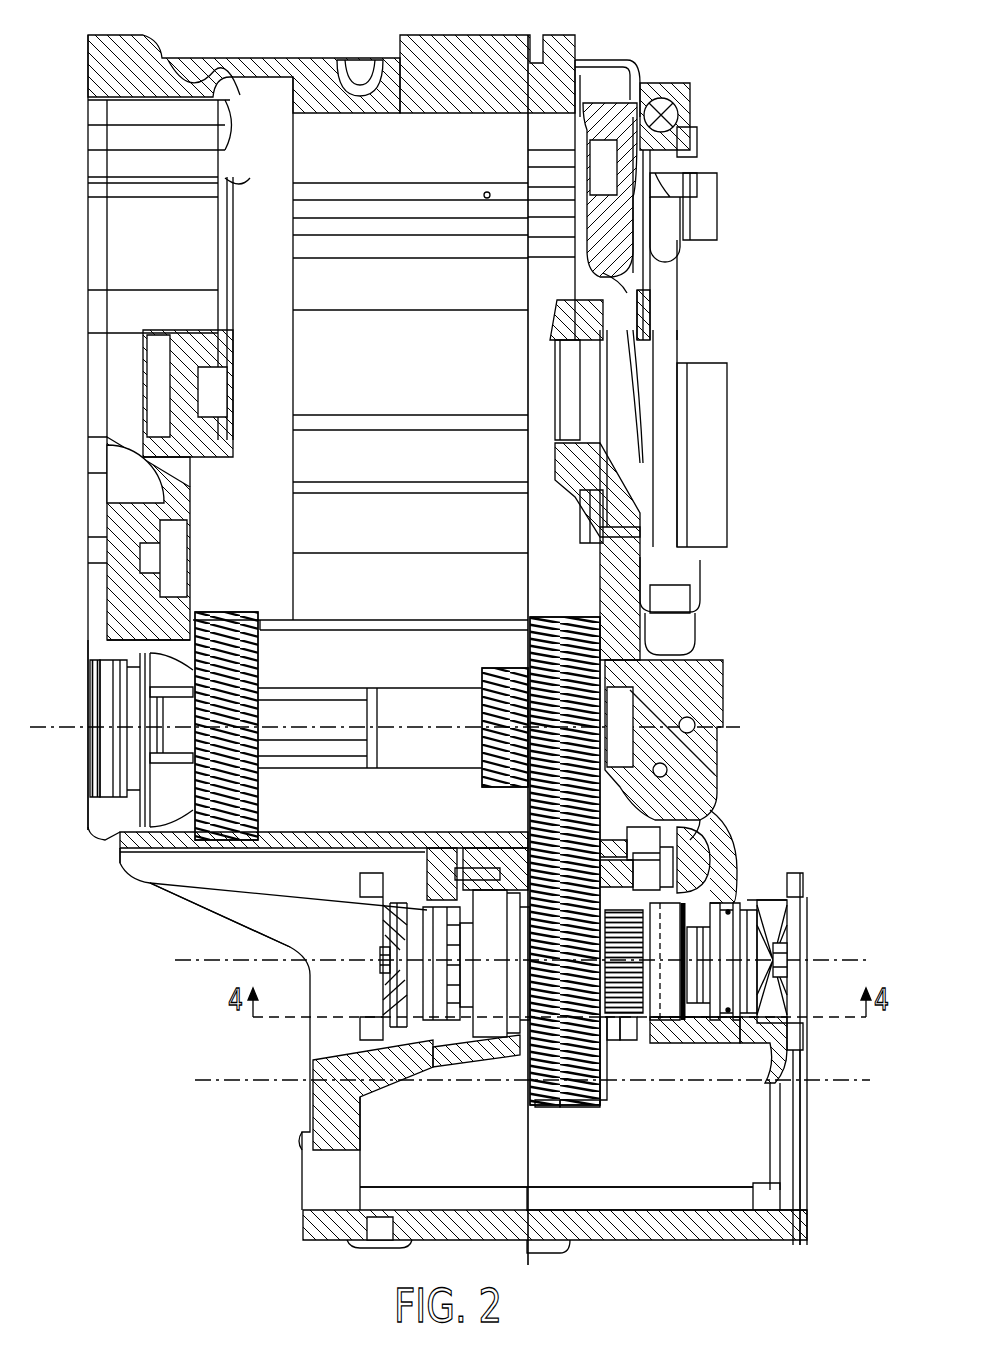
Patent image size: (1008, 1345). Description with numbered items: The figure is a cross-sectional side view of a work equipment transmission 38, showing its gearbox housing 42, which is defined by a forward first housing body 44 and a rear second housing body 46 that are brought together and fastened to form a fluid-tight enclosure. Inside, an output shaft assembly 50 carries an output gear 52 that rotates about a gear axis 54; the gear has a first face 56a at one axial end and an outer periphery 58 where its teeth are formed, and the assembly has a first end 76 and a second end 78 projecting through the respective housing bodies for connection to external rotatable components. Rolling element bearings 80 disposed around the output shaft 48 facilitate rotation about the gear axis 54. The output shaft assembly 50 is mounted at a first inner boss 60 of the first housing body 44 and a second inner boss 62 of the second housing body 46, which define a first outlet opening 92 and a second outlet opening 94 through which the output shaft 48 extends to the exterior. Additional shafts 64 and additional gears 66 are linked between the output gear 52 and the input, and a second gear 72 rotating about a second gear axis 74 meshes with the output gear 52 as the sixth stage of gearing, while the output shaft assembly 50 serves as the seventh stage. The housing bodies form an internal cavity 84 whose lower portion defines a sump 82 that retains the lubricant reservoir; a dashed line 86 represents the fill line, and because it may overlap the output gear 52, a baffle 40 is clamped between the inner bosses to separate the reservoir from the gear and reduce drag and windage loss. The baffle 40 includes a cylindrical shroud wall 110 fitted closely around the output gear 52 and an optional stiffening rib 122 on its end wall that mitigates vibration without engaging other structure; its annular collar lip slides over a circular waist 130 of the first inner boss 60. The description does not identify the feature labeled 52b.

The transmission 38 is at (129, 1085).
The baffle 40 is at (617, 1097).
The gearbox housing 42 is at (524, 28).
The first housing body 44 is at (585, 58).
The second housing body 46 is at (455, 34).
The output shaft 48 is at (423, 978).
The output shaft assembly 50 is at (380, 958).
The output gear 52 is at (570, 1105).
The hub flange 52b is at (517, 1058).
The gear axis 54 is at (257, 963).
The first face 56a is at (640, 1047).
The outer periphery 58 is at (616, 1100).
The first inner boss 60 is at (727, 1058).
The second inner boss 62 is at (510, 1118).
The additional shafts 64 is at (315, 690).
The additional gears 66 is at (222, 612).
The second gear 72 is at (540, 630).
The second gear axis 74 is at (735, 722).
The first end 76 is at (800, 968).
The second end 78 is at (390, 967).
The rolling element bearings 80 is at (478, 868).
The sump 82 is at (388, 1176).
The internal cavity 84 is at (420, 1187).
The dashed line 86 is at (822, 1085).
The first outlet opening 92 is at (362, 930).
The second outlet opening 94 is at (685, 1008).
The shroud wall 110 is at (547, 1108).
The stiffening rib 122 is at (700, 820).
The circular waist 130 is at (690, 1053).